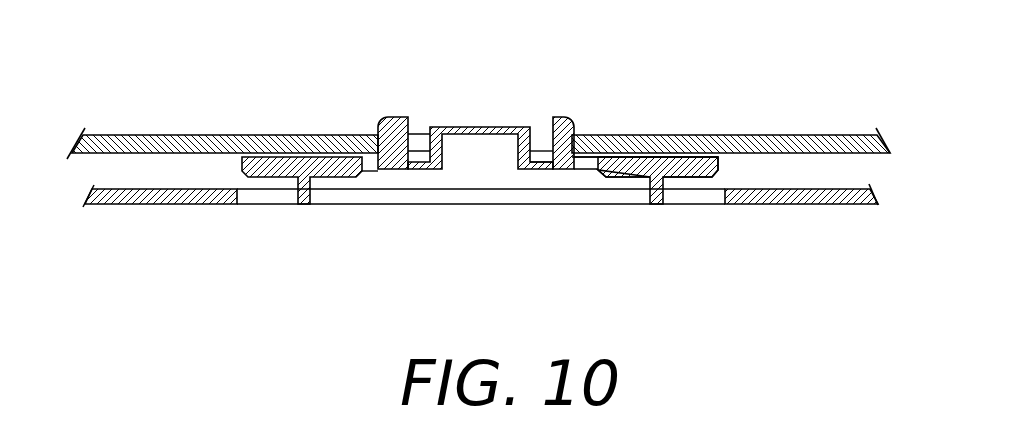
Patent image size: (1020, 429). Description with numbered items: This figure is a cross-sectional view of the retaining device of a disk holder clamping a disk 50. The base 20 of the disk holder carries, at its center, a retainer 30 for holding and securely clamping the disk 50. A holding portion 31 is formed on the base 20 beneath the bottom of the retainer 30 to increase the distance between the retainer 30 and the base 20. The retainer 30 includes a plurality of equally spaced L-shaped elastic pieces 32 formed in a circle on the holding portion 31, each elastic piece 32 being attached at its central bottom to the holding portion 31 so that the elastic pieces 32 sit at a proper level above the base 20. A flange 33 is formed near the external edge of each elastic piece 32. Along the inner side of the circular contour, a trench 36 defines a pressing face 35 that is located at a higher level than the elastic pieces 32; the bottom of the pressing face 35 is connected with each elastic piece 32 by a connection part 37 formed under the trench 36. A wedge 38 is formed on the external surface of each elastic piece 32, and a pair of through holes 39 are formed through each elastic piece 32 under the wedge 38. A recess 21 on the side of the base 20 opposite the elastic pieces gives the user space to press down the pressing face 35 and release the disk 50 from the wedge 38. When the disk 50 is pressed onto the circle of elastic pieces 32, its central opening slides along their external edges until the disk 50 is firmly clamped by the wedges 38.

The base 20 is at (198, 204).
The recess 21 is at (465, 182).
The retainer 30 is at (293, 120).
The holding portion 31 is at (662, 204).
The elastic piece 32 is at (672, 143).
The flange 33 is at (750, 135).
The pressing face 35 is at (470, 128).
The trench 36 is at (540, 158).
The connection part 37 is at (535, 169).
The wedge 38 is at (576, 124).
The through hole 39 is at (585, 169).
The disk 50 is at (650, 137).